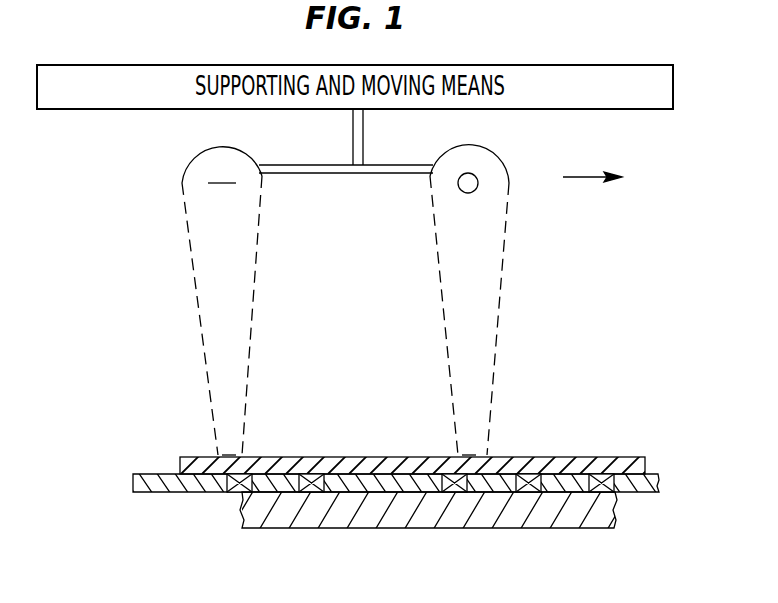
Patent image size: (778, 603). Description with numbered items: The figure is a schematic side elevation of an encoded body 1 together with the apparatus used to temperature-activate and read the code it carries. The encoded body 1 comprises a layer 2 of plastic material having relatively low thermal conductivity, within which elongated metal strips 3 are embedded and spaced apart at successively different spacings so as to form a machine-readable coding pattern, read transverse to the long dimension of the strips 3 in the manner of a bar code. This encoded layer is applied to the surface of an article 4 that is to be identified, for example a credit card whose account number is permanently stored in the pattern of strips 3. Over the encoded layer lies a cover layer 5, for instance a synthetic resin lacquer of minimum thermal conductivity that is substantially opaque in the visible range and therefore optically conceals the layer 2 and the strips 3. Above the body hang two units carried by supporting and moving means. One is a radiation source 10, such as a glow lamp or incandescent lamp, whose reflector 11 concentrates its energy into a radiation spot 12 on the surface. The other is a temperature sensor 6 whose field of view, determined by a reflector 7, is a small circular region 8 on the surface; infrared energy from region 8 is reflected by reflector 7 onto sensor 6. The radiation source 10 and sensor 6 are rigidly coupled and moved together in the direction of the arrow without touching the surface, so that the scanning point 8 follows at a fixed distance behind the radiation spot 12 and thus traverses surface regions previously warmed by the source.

The encoded body 1 is at (412, 495).
The layer of plastic material 2 is at (209, 492).
The metal strips 3 is at (303, 492).
The article 4 is at (378, 524).
The cover layer 5 is at (575, 457).
The temperature sensor 6 is at (224, 183).
The reflector 7 is at (246, 152).
The circular region 8 is at (230, 456).
The radiation source 10 is at (468, 193).
The reflector 11 is at (500, 157).
The radiation spot 12 is at (466, 453).